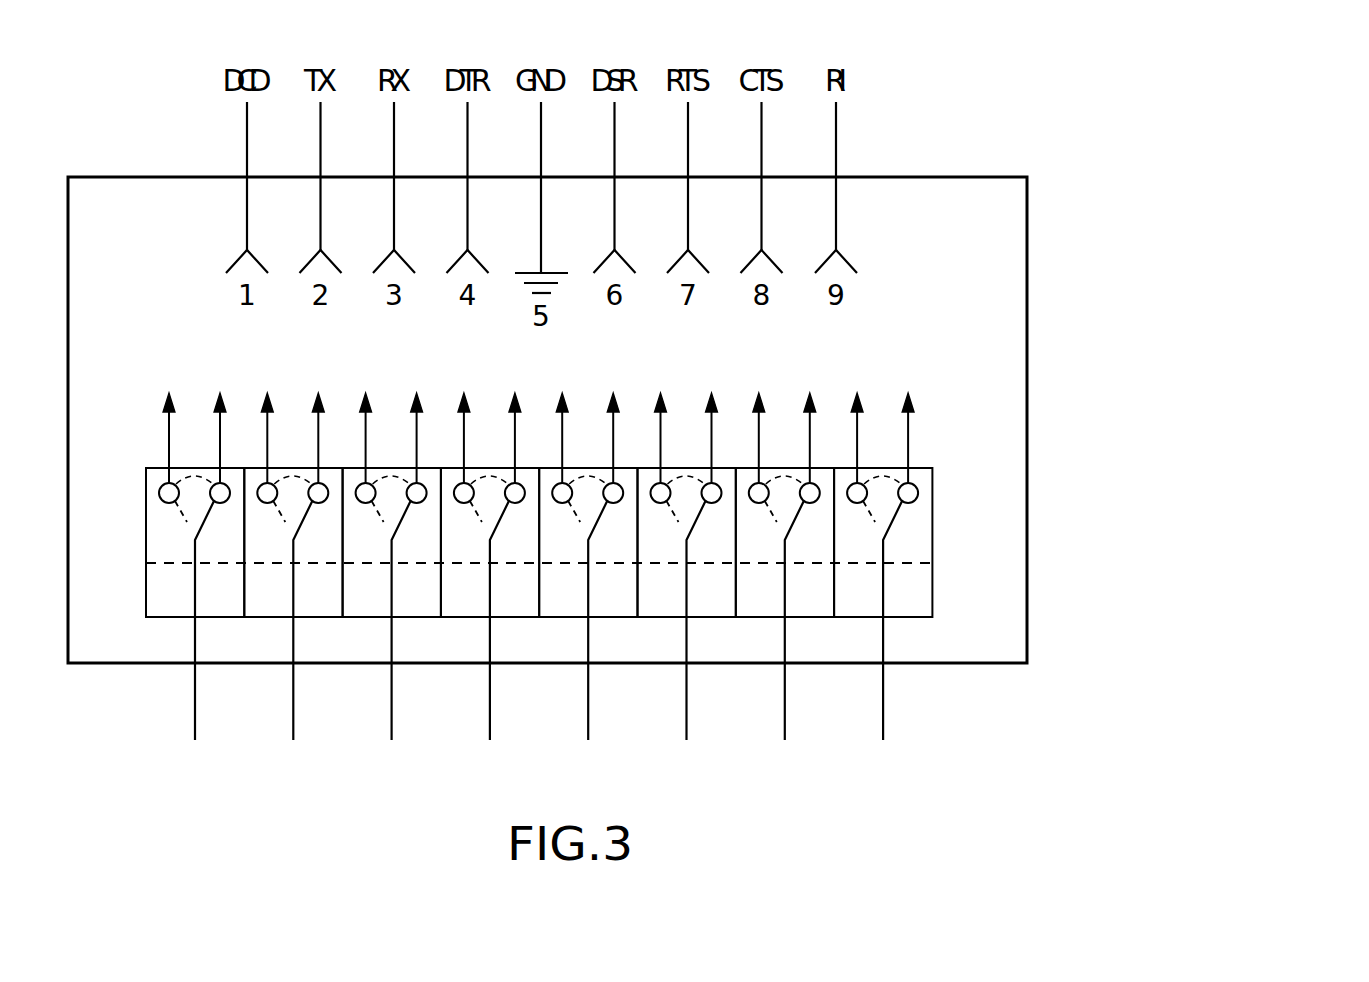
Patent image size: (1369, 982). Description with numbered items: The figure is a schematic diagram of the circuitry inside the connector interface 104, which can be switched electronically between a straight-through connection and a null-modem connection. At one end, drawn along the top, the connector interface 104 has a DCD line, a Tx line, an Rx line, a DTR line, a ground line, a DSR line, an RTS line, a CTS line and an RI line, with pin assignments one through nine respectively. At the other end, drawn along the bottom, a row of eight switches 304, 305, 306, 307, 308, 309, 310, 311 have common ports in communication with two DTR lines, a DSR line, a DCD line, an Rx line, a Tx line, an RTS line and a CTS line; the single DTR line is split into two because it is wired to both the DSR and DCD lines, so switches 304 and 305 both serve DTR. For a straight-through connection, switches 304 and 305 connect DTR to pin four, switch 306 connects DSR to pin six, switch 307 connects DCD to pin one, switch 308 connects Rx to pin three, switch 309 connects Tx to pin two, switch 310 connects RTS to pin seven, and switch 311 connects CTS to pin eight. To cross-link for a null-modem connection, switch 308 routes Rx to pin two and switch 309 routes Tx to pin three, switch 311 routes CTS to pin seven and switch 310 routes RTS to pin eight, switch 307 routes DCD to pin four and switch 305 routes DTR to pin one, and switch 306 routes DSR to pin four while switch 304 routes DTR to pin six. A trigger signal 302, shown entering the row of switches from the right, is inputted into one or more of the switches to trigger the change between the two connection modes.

The connector interface 104 is at (1027, 208).
The trigger signal 302 is at (950, 563).
The switch 304 is at (195, 569).
The switch 305 is at (293, 569).
The switch 306 is at (392, 569).
The switch 307 is at (490, 569).
The switch 308 is at (588, 569).
The switch 309 is at (687, 569).
The switch 310 is at (785, 569).
The switch 311 is at (883, 569).